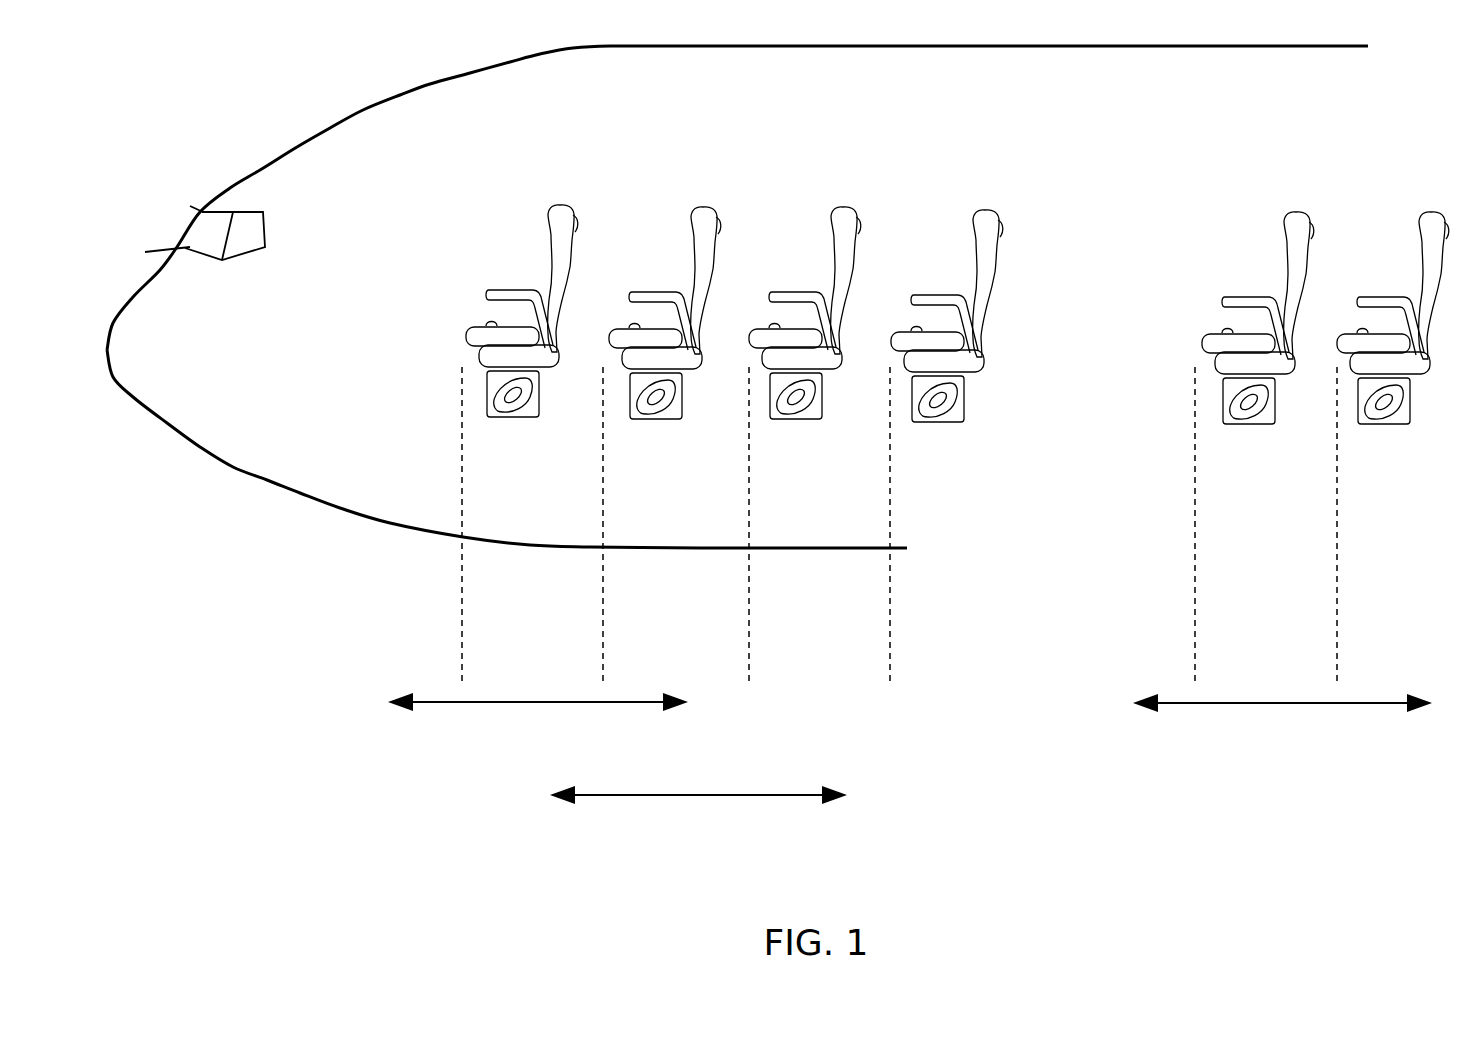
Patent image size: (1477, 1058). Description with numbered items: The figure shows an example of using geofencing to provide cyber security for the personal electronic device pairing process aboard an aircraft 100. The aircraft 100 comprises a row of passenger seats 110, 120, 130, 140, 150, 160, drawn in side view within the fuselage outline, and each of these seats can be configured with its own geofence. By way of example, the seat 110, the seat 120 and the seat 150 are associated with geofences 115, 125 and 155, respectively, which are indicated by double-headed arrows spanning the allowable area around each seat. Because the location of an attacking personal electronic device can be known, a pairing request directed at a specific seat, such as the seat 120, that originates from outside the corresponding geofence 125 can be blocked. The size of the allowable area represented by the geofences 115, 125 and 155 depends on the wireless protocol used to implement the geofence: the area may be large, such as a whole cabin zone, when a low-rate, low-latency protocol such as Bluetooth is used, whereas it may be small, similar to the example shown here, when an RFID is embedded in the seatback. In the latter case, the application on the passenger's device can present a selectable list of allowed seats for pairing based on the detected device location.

The aircraft 100 is at (297, 146).
The seat 110 is at (566, 205).
The seat 120 is at (709, 207).
The seat 130 is at (849, 207).
The seat 140 is at (991, 210).
The seat 150 is at (1302, 212).
The seat 160 is at (1437, 212).
The geofence 115 is at (538, 718).
The geofence 125 is at (698, 813).
The geofence 155 is at (1282, 720).